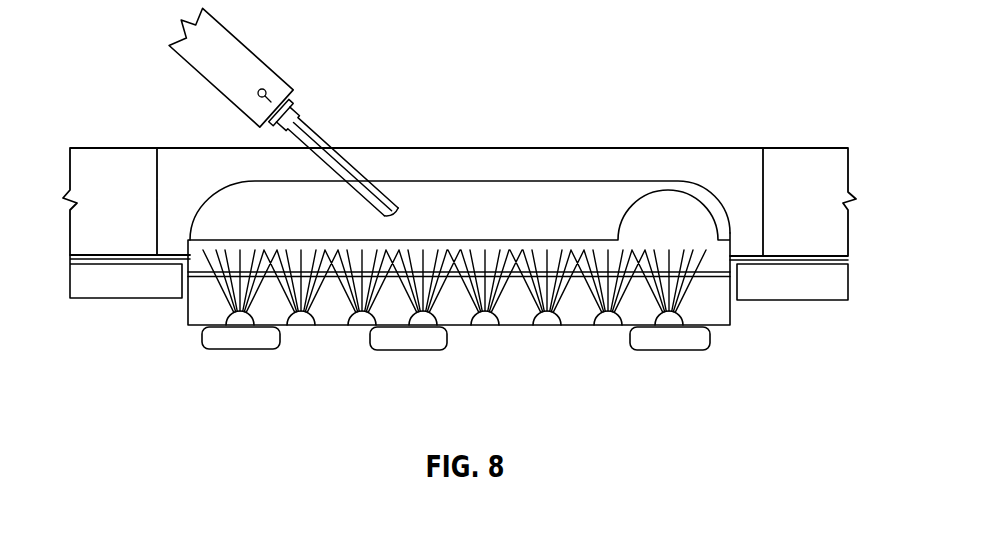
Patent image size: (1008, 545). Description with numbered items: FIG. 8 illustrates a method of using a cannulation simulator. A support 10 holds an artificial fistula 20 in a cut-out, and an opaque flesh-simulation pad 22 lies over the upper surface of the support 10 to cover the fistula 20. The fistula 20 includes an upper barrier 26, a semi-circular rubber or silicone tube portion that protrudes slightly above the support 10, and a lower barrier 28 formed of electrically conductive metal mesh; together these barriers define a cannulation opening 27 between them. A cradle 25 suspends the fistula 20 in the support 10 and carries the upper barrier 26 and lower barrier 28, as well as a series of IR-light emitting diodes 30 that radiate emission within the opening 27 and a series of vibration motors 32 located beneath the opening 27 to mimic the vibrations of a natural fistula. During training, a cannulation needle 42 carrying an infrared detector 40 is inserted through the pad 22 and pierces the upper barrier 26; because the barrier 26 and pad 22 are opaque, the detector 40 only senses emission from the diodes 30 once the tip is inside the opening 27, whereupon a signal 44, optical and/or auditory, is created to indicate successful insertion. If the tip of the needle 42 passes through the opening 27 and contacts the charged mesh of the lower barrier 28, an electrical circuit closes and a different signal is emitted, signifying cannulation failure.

The support 10 is at (800, 287).
The artificial fistula 20 is at (710, 275).
The flesh-simulation pad 22 is at (112, 172).
The cradle 25 is at (182, 306).
The upper barrier 26 is at (520, 228).
The cannulation opening 27 is at (657, 227).
The lower barrier 28 is at (203, 277).
The IR-light emitting diodes 30 is at (488, 327).
The vibration motors 32 is at (248, 348).
The infrared detector 40 is at (400, 183).
The cannulation needle 42 is at (307, 118).
The signal 44 is at (265, 82).